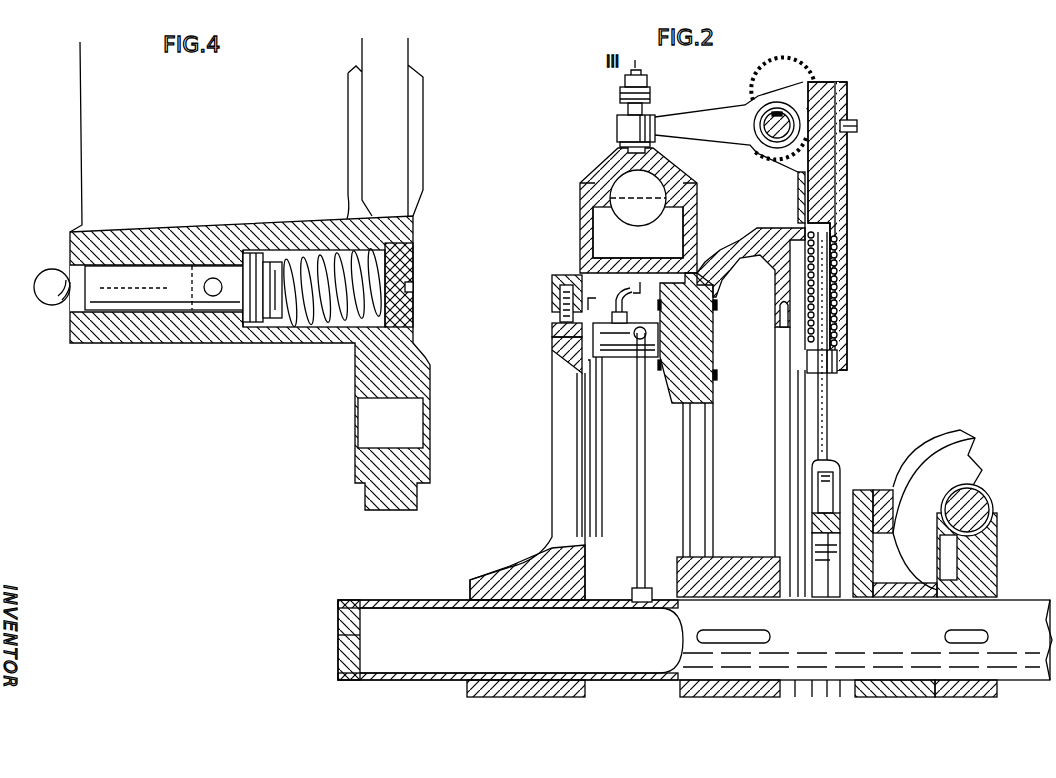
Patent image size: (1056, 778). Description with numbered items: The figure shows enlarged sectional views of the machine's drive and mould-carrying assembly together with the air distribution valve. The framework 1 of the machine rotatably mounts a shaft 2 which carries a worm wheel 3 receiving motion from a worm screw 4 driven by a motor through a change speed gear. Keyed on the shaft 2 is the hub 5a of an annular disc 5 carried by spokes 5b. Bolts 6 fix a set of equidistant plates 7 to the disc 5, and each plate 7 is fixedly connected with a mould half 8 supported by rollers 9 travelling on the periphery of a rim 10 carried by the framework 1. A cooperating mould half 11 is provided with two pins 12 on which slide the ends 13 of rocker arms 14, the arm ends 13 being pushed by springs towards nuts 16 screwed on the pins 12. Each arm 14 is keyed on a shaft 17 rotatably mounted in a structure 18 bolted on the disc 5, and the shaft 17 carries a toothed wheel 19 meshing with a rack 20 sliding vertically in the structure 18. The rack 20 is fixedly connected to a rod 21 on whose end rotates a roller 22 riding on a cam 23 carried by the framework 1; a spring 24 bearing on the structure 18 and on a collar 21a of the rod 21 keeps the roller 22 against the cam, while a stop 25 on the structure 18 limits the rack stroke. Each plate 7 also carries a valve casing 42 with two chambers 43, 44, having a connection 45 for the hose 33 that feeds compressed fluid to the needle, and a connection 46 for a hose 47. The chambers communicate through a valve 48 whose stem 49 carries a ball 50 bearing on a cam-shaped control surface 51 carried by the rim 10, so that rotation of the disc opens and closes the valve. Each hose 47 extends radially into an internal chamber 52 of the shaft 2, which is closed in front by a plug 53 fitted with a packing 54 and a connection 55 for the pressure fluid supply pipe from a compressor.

In FIG. 2, the framework 1 is at (495, 587).
In FIG. 2, the shaft 2 is at (1018, 608).
In FIG. 2, the worm wheel 3 is at (997, 519).
In FIG. 2, the worm screw 4 is at (986, 497).
In FIG. 2, the annular disc 5 is at (708, 346).
In FIG. 2, the hub 5a is at (734, 580).
In FIG. 2, the spokes 5b is at (697, 513).
In FIG. 2, the bolts 6 is at (717, 304).
In FIG. 4, the plate 7 is at (412, 380).
In FIG. 2, the plate 7 is at (677, 386).
In FIG. 2, the mould half 8 is at (697, 222).
In FIG. 2, the rollers 9 is at (560, 306).
In FIG. 2, the rim 10 is at (553, 337).
In FIG. 2, the mould half 11 is at (697, 186).
In FIG. 2, the pins 12 is at (645, 80).
In FIG. 2, the arm ends 13 is at (617, 128).
In FIG. 2, the rocker arms 14 is at (708, 122).
In FIG. 2, the nuts 16 is at (620, 97).
In FIG. 2, the shaft 17 is at (771, 113).
In FIG. 2, the structure 18 is at (850, 178).
In FIG. 2, the toothed wheel 19 is at (784, 100).
In FIG. 2, the rack 20 is at (797, 170).
In FIG. 2, the rod 21 is at (826, 418).
In FIG. 2, the collar 21a is at (840, 372).
In FIG. 2, the roller 22 is at (815, 487).
In FIG. 2, the cam 23 is at (820, 521).
In FIG. 2, the spring 24 is at (840, 301).
In FIG. 2, the stop 25 is at (857, 125).
In FIG. 2, the hose 33 is at (615, 296).
In FIG. 4, the valve casing 42 is at (186, 238).
In FIG. 2, the valve casing 42 is at (622, 342).
In FIG. 4, the chamber 43 is at (315, 317).
In FIG. 4, the chamber 44 is at (210, 313).
In FIG. 4, the connection 45 is at (315, 240).
In FIG. 4, the connection 46 is at (217, 283).
In FIG. 2, the hose 47 is at (640, 454).
In FIG. 4, the valve 48 is at (253, 302).
In FIG. 4, the stem 49 is at (140, 258).
In FIG. 4, the ball 50 is at (48, 272).
In FIG. 2, the ball 50 is at (583, 352).
In FIG. 2, the cam-shaped control surface 51 is at (578, 353).
In FIG. 2, the internal chamber 52 is at (600, 620).
In FIG. 2, the plug 53 is at (338, 628).
In FIG. 2, the packing 54 is at (373, 602).
In FIG. 2, the connection 55 is at (338, 655).